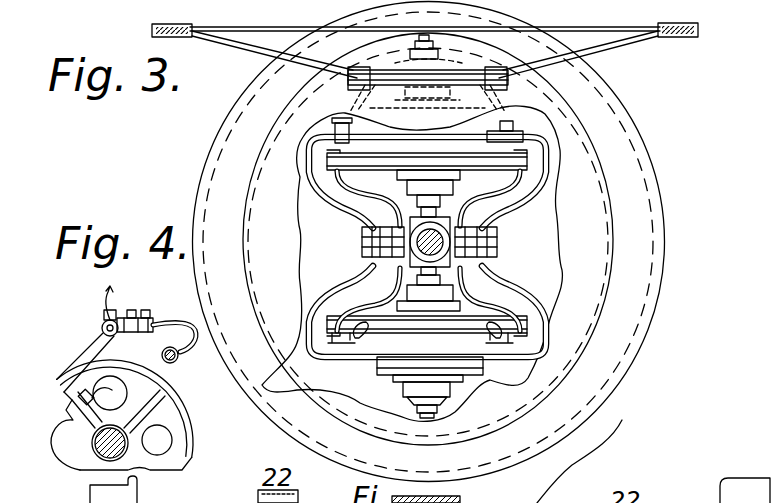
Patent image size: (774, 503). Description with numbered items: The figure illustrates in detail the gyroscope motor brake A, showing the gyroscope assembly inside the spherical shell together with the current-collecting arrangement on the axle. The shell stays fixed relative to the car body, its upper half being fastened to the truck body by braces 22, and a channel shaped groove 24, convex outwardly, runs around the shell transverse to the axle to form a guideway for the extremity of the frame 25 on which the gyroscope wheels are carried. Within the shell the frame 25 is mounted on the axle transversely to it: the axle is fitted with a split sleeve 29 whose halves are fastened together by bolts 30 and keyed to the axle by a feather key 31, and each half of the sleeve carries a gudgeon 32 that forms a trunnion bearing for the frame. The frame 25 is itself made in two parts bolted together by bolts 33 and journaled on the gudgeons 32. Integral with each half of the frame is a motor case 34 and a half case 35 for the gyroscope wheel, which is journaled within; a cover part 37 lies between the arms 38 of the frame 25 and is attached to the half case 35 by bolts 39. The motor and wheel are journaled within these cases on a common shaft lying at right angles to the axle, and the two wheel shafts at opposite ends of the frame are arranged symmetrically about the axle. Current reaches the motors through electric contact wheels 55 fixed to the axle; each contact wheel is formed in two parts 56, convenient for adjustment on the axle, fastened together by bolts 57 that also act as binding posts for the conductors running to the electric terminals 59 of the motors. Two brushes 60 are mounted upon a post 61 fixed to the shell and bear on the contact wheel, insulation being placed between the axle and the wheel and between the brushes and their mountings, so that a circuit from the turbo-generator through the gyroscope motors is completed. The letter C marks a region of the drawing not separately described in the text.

In FIG. 3, the braces 22 is at (690, 36).
In FIG. 3, the channel shaped groove 24 is at (448, 491).
In FIG. 3, the frame 25 is at (535, 130).
In FIG. 3, the split sleeve 29 is at (448, 220).
In FIG. 3, the bolts 30 is at (412, 220).
In FIG. 3, the feather key 31 is at (370, 338).
In FIG. 3, the gudgeon 32 is at (362, 243).
In FIG. 3, the bolts 33 is at (345, 270).
In FIG. 3, the motor case 34 is at (352, 136).
In FIG. 3, the half case 35 is at (437, 153).
In FIG. 3, the cover part 37 is at (368, 212).
In FIG. 3, the arms 38 is at (320, 188).
In FIG. 3, the bolts 39 is at (245, 120).
In FIG. 3, the electric terminals 59 is at (540, 149).
In FIG. 3, the chamber C is at (426, 263).
In FIG. 3, the gyroscope motor brake A is at (580, 414).
In FIG. 4, the electric contact wheels 55 is at (78, 472).
In FIG. 4, the parts 56 is at (170, 452).
In FIG. 4, the bolts 57 is at (75, 466).
In FIG. 4, the brushes 60 is at (74, 362).
In FIG. 4, the post 61 is at (102, 323).